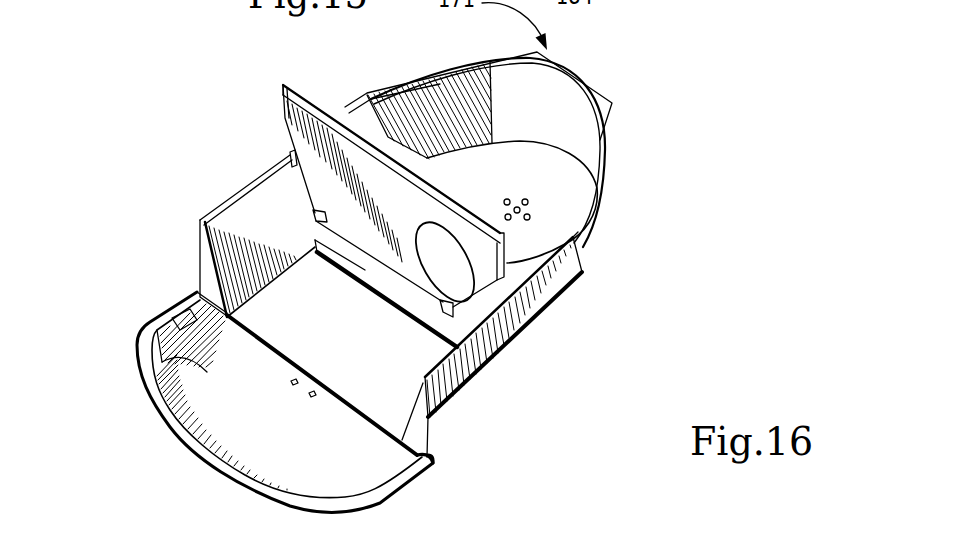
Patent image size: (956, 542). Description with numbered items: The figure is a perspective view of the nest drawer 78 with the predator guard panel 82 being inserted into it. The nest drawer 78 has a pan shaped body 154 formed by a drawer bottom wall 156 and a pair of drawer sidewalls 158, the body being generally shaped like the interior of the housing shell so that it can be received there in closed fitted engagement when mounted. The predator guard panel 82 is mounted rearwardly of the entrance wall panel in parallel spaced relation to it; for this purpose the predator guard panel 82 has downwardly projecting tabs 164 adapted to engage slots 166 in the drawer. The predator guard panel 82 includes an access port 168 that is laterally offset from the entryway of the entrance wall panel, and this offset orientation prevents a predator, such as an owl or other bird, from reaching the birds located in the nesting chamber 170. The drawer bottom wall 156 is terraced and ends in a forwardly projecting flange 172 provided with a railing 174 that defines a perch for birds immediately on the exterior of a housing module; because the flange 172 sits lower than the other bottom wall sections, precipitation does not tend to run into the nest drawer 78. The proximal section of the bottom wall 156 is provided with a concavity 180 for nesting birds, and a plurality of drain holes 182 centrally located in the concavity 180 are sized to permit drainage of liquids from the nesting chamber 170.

The nest drawer 78 is at (188, 163).
The predator guard panel 82 is at (318, 134).
The pan shaped body 154 is at (500, 350).
The drawer bottom wall 156 is at (472, 378).
The drawer sidewalls 158 is at (563, 272).
The downwardly projecting tabs 164 is at (313, 216).
The slots 166 is at (322, 272).
The access port 168 is at (438, 248).
The nesting chamber 170 is at (564, 100).
The forwardly projecting flange 172 is at (160, 364).
The railing 174 is at (193, 443).
The concavity 180 is at (562, 192).
The drain holes 182 is at (520, 196).